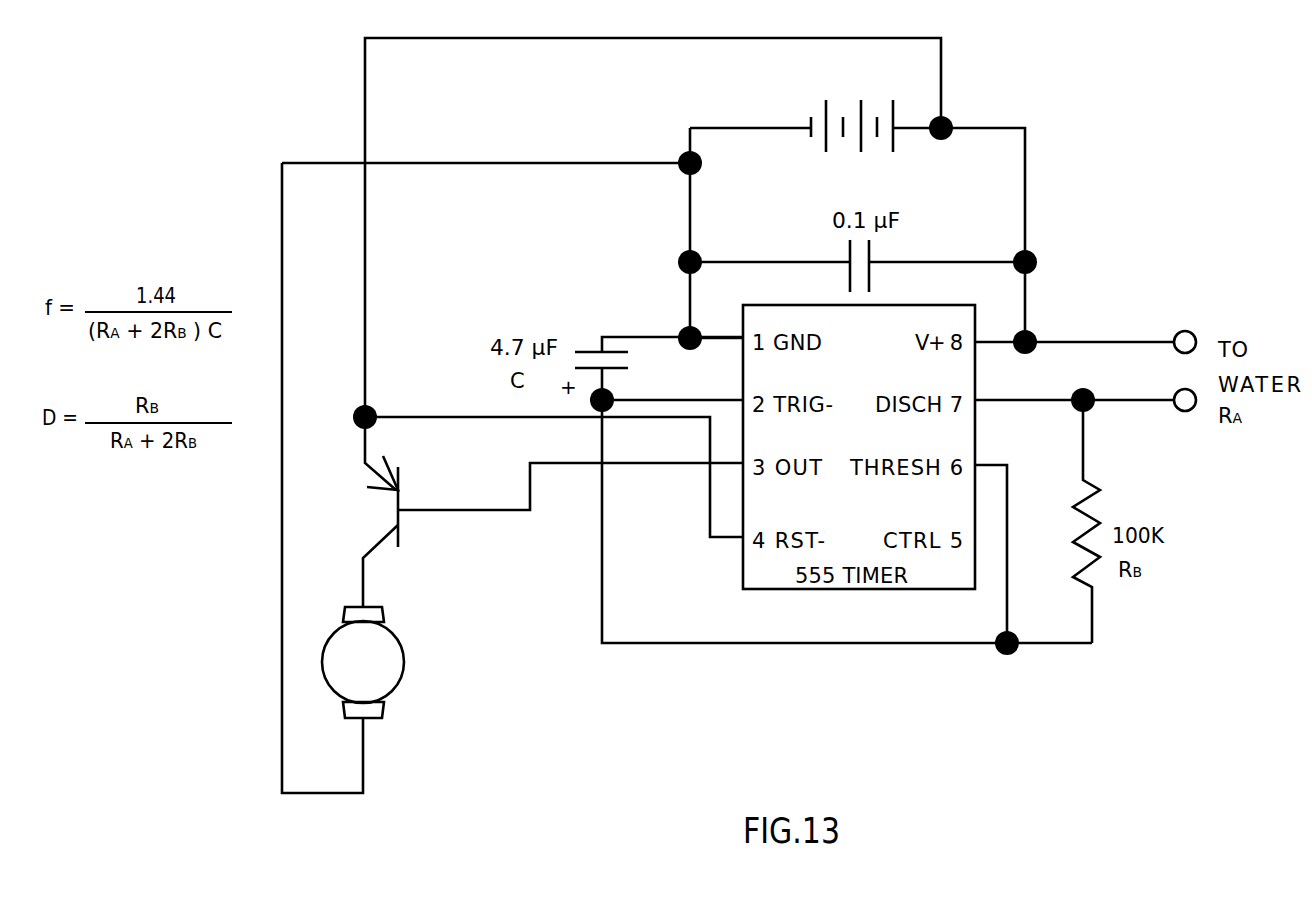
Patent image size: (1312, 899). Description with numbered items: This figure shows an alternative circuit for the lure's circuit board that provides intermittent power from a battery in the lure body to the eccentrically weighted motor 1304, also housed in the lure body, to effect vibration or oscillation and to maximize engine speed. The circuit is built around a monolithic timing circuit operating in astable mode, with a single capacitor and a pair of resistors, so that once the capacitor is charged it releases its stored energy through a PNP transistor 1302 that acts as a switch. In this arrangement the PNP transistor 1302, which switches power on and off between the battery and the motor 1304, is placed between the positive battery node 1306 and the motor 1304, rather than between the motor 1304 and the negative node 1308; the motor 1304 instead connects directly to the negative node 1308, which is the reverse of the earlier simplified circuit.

The PNP transistor 1302 is at (400, 537).
The motor 1304 is at (395, 692).
The positive battery node 1306 is at (950, 117).
The negative node 1308 is at (684, 163).